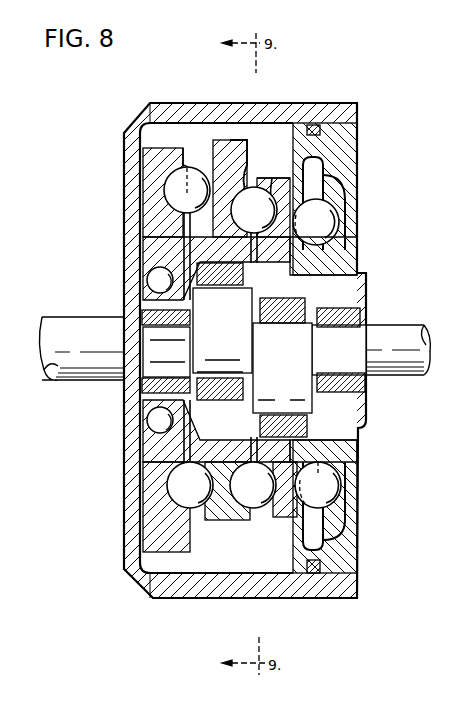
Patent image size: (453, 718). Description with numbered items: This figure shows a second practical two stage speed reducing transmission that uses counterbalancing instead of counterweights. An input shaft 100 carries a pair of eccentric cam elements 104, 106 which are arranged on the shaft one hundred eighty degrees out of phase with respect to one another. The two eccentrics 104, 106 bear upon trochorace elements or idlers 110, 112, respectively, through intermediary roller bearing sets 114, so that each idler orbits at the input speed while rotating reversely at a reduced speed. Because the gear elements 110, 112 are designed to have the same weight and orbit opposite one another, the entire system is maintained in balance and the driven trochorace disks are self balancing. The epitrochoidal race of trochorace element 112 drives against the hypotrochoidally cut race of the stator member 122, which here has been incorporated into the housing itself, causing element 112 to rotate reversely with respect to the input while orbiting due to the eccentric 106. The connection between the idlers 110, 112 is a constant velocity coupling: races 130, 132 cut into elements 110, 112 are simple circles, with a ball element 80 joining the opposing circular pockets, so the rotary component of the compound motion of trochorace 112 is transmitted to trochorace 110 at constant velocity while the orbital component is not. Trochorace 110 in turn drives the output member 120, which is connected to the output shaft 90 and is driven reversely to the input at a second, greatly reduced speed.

The ball element 80 is at (322, 223).
The output shaft 90 is at (87, 333).
The input shaft 100 is at (383, 342).
The eccentric cam 104 is at (252, 332).
The eccentric cam 106 is at (298, 357).
The trochorace element 110 is at (233, 145).
The trochorace element 112 is at (270, 180).
The roller bearing sets 114 is at (252, 309).
The output member 120 is at (153, 178).
The stator member 122 is at (350, 450).
The race 130 is at (232, 507).
The race 132 is at (262, 520).